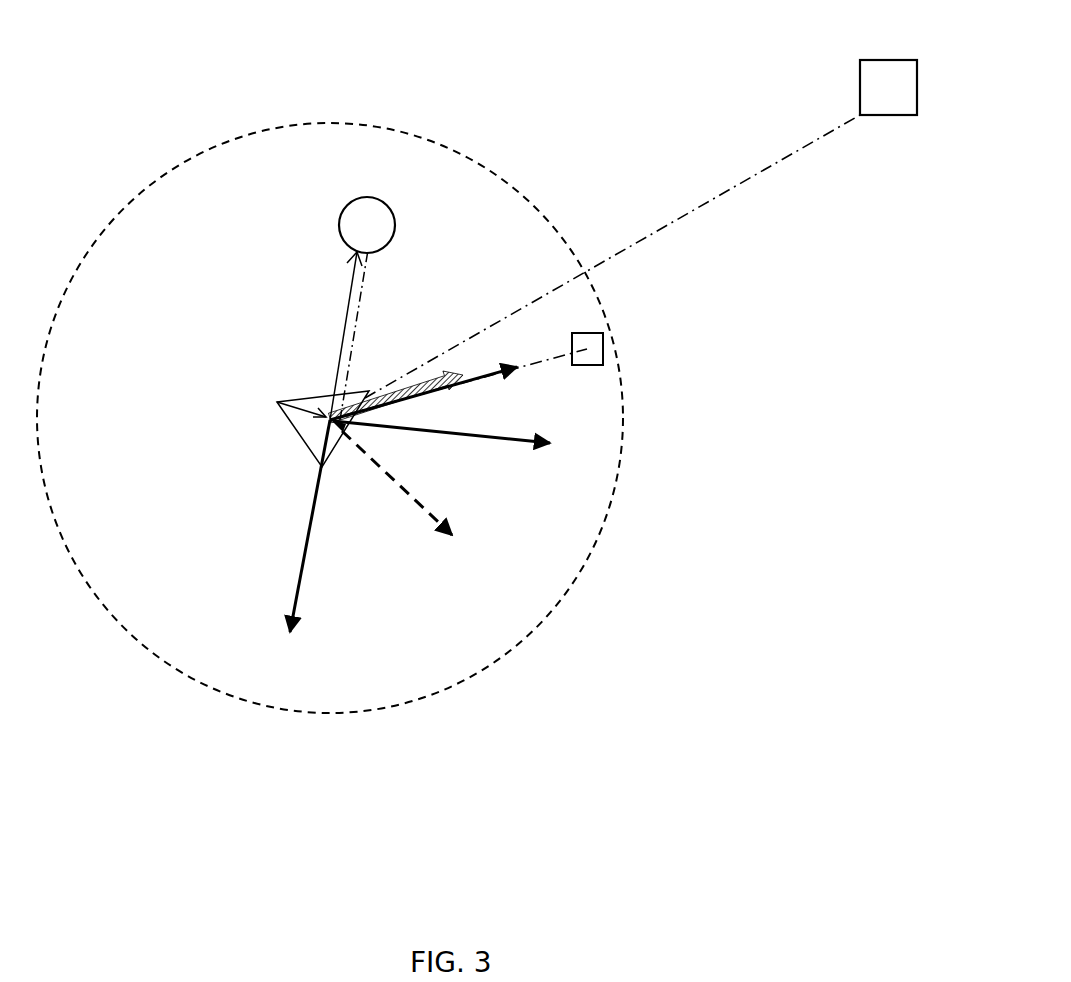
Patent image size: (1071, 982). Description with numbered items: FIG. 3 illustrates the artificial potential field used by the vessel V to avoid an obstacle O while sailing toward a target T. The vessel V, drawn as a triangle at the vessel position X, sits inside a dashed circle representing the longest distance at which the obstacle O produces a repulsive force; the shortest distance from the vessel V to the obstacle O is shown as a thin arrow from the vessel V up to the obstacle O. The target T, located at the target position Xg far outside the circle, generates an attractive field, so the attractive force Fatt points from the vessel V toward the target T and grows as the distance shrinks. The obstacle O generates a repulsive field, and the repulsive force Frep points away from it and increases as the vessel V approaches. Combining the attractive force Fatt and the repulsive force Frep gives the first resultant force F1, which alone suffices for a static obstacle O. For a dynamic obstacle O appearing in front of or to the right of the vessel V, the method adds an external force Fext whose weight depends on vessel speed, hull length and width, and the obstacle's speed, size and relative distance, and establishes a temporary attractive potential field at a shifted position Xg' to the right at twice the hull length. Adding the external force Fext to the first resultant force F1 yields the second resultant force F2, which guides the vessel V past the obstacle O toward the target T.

The target T is at (647, 206).
The obstacle O is at (367, 204).
The vessel position X is at (318, 441).
The vessel V is at (287, 428).
The target position Xg is at (922, 156).
The temporary attractive potential field position Xg' is at (505, 374).
The attractive force Fatt is at (423, 393).
The repulsive force Frep is at (322, 546).
The external force Fext is at (396, 381).
The first resultant force F1 is at (400, 512).
The second resultant force F2 is at (445, 456).